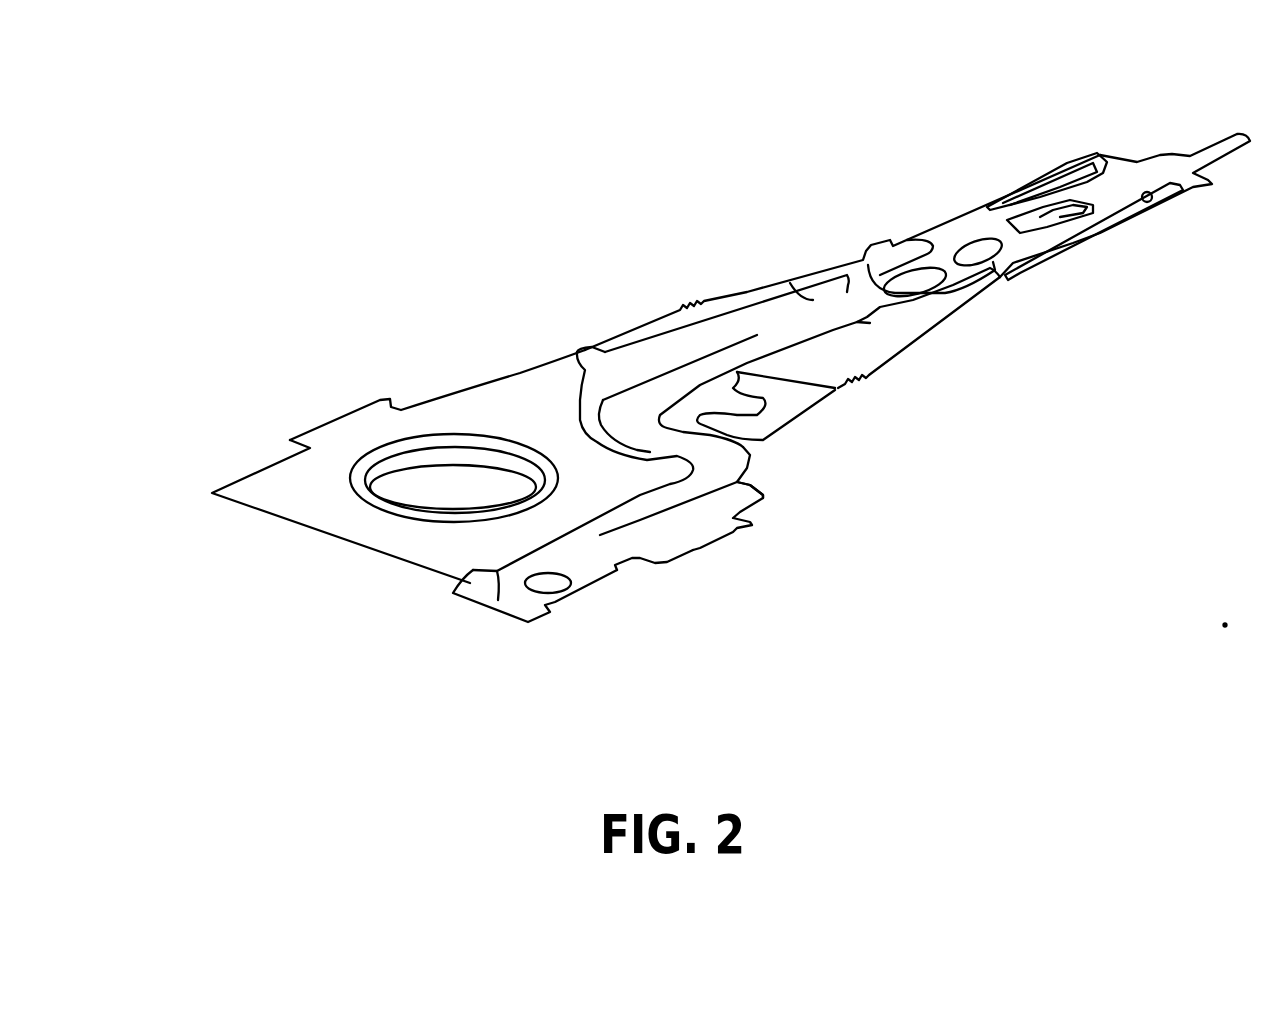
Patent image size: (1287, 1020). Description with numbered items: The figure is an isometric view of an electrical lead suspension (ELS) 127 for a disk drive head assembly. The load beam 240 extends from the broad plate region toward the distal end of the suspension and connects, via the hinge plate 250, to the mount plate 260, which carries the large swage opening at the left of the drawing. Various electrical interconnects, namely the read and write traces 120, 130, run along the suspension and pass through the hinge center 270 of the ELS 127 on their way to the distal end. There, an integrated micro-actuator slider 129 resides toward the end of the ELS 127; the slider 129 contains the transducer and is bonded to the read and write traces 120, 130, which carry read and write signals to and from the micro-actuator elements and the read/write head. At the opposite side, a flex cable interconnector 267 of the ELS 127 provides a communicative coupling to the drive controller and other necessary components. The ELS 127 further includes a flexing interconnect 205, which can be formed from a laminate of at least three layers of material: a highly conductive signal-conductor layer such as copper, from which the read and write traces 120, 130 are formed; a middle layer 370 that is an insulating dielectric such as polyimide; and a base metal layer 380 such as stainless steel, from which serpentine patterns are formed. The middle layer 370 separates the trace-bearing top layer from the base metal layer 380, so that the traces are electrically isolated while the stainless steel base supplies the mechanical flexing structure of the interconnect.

The electrical lead suspension 127 is at (700, 66).
The hinge plate 250 is at (506, 373).
The read trace 120 is at (726, 337).
The write trace 130 is at (764, 384).
The load beam 240 is at (754, 276).
The mount plate 260 is at (386, 446).
The base metal layer 380 is at (598, 563).
The middle layer 370 is at (456, 584).
The flexing interconnect 205 is at (650, 441).
The flex cable interconnector 267 is at (722, 523).
The hinge center 270 is at (747, 408).
The integrated micro-actuator slider 129 is at (1098, 248).